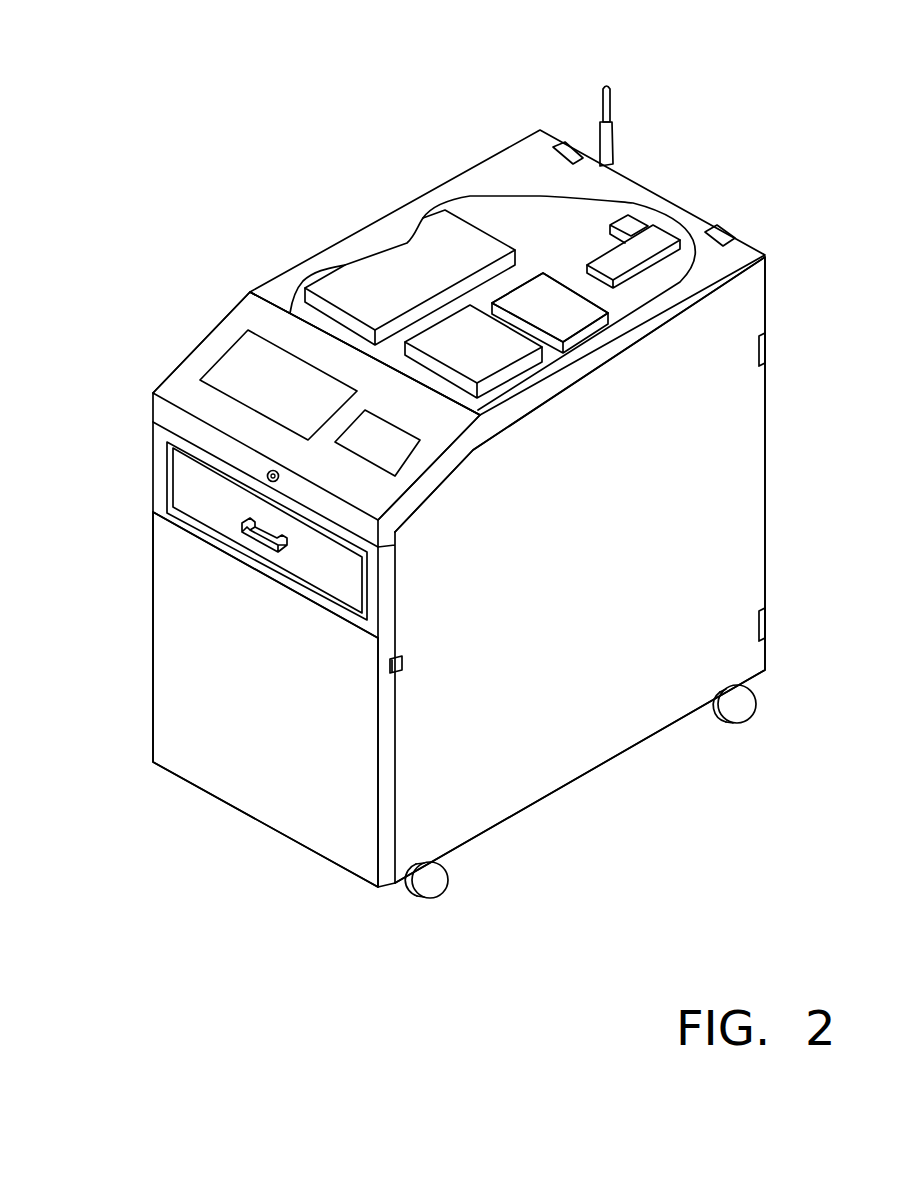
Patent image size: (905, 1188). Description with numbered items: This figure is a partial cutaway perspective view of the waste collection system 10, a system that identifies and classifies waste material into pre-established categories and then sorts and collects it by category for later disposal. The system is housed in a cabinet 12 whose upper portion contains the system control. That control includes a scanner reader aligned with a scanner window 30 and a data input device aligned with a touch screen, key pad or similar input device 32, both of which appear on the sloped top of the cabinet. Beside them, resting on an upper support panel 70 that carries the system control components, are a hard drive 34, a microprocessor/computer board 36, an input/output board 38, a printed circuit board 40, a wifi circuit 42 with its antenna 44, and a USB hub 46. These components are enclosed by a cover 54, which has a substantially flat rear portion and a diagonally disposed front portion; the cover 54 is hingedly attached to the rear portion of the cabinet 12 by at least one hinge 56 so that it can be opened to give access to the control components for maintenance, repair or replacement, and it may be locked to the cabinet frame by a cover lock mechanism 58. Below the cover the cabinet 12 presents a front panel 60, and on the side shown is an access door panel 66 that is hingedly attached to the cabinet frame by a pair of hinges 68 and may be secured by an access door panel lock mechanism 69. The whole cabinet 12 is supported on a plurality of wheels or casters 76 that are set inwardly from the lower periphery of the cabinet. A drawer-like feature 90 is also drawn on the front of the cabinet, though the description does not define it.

The waste collection system 10 is at (272, 123).
The cabinet 12 is at (110, 606).
The scanner window 30 is at (237, 378).
The touch screen, key pad or similar input device 32 is at (408, 446).
The hard drive 34 is at (499, 350).
The microprocessor/computer board 36 is at (503, 348).
The input/output board 38 is at (565, 317).
The printed circuit board 40 is at (405, 262).
The wifi circuit 42 is at (620, 233).
The antenna 44 is at (607, 153).
The USB hub 46 is at (647, 248).
The cover 54 is at (247, 318).
The hinge 56 is at (573, 157).
The cover lock mechanism 58 is at (266, 466).
The front panel 60 is at (252, 713).
The access door panel 66 is at (688, 487).
The hinge 68 is at (766, 348).
The access door panel lock mechanism 69 is at (402, 658).
The upper support panel 70 is at (522, 212).
The wheel or caster 76 is at (440, 876).
The drawer with handle 90 is at (243, 523).